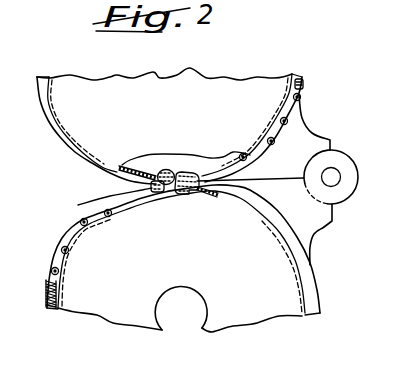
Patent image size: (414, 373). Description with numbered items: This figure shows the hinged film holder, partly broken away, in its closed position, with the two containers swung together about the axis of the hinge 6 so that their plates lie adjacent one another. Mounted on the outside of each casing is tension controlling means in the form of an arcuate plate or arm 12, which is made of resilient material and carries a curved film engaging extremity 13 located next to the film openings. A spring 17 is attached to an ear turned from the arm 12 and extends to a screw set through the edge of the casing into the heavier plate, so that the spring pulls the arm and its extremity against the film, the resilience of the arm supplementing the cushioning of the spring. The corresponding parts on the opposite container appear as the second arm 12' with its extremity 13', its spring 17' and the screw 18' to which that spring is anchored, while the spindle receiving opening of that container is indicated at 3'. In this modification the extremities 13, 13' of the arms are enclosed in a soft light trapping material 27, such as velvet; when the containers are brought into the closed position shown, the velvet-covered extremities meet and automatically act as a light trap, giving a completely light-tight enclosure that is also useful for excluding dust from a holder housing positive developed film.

The spring 17 is at (319, 86).
The arcuate plate or arm 12 is at (193, 129).
The hinge 6 is at (340, 172).
The soft light trapping material 27 is at (155, 183).
The lower band 12' is at (183, 250).
The left hook of buckle 13' is at (155, 213).
The curved film engaging extremity 13 is at (187, 213).
The rivet 18' is at (36, 267).
The spring fastening 17' is at (28, 294).
The cutout opening 3' is at (191, 319).